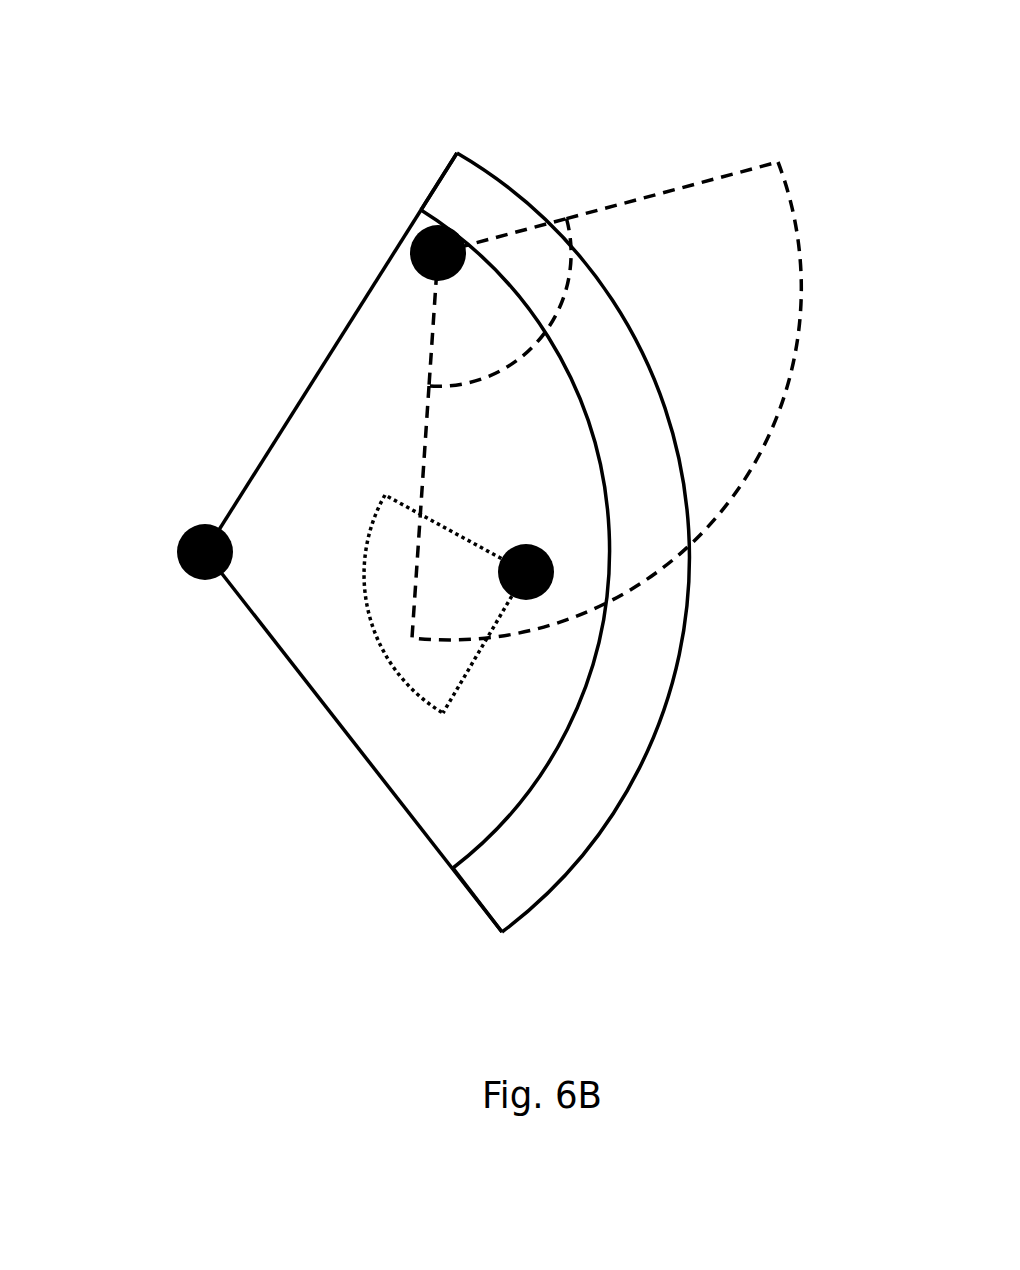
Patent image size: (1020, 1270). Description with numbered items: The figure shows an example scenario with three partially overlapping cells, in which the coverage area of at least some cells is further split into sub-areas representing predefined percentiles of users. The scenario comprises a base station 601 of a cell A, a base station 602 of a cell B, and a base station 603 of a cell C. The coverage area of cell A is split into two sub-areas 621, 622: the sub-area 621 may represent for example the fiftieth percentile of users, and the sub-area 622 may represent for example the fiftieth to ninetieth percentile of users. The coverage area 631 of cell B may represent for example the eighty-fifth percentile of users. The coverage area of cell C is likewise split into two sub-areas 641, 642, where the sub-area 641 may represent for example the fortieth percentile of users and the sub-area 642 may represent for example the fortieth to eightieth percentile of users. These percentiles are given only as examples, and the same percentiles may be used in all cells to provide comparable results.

The base station of cell A 601 is at (182, 570).
The base station of cell B 602 is at (553, 582).
The base station of cell C 603 is at (412, 244).
The sub-area of cell A coverage area 621 is at (307, 615).
The sub-area of cell A coverage area 622 is at (515, 862).
The coverage area of cell B 631 is at (397, 558).
The sub-area of cell C coverage area 641 is at (483, 287).
The sub-area of cell C coverage area 642 is at (662, 263).